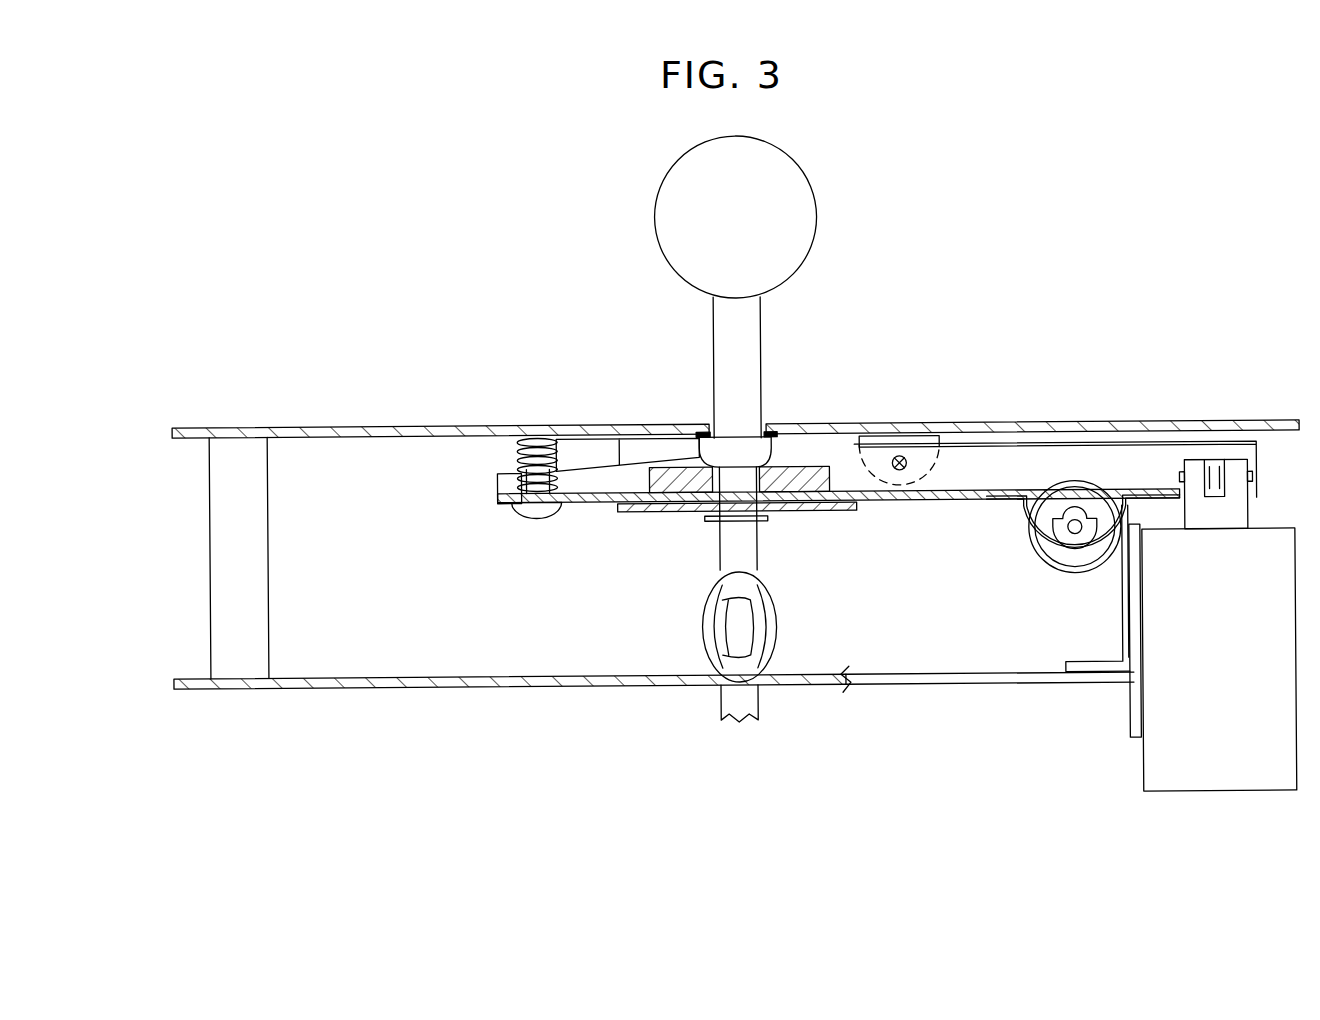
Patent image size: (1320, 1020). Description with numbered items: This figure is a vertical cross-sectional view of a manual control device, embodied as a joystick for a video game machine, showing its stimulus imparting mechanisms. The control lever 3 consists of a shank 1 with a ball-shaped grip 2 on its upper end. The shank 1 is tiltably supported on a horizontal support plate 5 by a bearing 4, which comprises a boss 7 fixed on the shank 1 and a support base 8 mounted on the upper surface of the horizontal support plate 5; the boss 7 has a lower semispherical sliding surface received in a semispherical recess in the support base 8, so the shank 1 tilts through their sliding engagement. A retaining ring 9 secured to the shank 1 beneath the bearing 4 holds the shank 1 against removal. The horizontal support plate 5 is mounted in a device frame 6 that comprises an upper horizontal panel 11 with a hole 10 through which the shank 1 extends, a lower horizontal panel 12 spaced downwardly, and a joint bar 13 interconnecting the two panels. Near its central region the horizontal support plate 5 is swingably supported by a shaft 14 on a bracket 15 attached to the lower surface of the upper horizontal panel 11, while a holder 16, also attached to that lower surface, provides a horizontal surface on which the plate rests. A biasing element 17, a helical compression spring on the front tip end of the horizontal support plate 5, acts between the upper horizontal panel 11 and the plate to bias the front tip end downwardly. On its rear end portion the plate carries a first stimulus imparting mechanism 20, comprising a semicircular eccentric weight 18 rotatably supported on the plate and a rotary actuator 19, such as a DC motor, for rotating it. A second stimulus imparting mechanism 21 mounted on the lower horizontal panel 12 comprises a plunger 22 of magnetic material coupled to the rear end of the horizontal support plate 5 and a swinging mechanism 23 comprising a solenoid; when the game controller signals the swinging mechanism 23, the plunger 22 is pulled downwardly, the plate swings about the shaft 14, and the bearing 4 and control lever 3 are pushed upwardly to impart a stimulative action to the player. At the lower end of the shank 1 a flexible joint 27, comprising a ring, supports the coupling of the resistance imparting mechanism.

The shank 1 is at (714, 318).
The ball-shaped grip 2 is at (665, 178).
The control lever 3 is at (803, 297).
The bearing 4 is at (820, 446).
The horizontal support plate 5 is at (578, 503).
The device frame 6 is at (366, 394).
The boss 7 is at (722, 440).
The support base 8 is at (695, 440).
The retaining ring 9 is at (765, 520).
The hole 10 is at (779, 438).
The upper horizontal panel 11 is at (1047, 424).
The lower horizontal panel 12 is at (410, 688).
The joint bar 13 is at (270, 560).
The shaft 14 is at (905, 470).
The bracket 15 is at (888, 503).
The holder 16 is at (640, 512).
The biasing element 17 is at (517, 452).
The semicircular eccentric weight 18 is at (1072, 542).
The rotary actuator 19 is at (1088, 482).
The first stimulus imparting mechanism 20 is at (1020, 565).
The second stimulus imparting mechanism 21 is at (1128, 762).
The plunger 22 is at (1240, 462).
The swinging mechanism 23 is at (1200, 795).
The flexible joint 27 is at (790, 625).